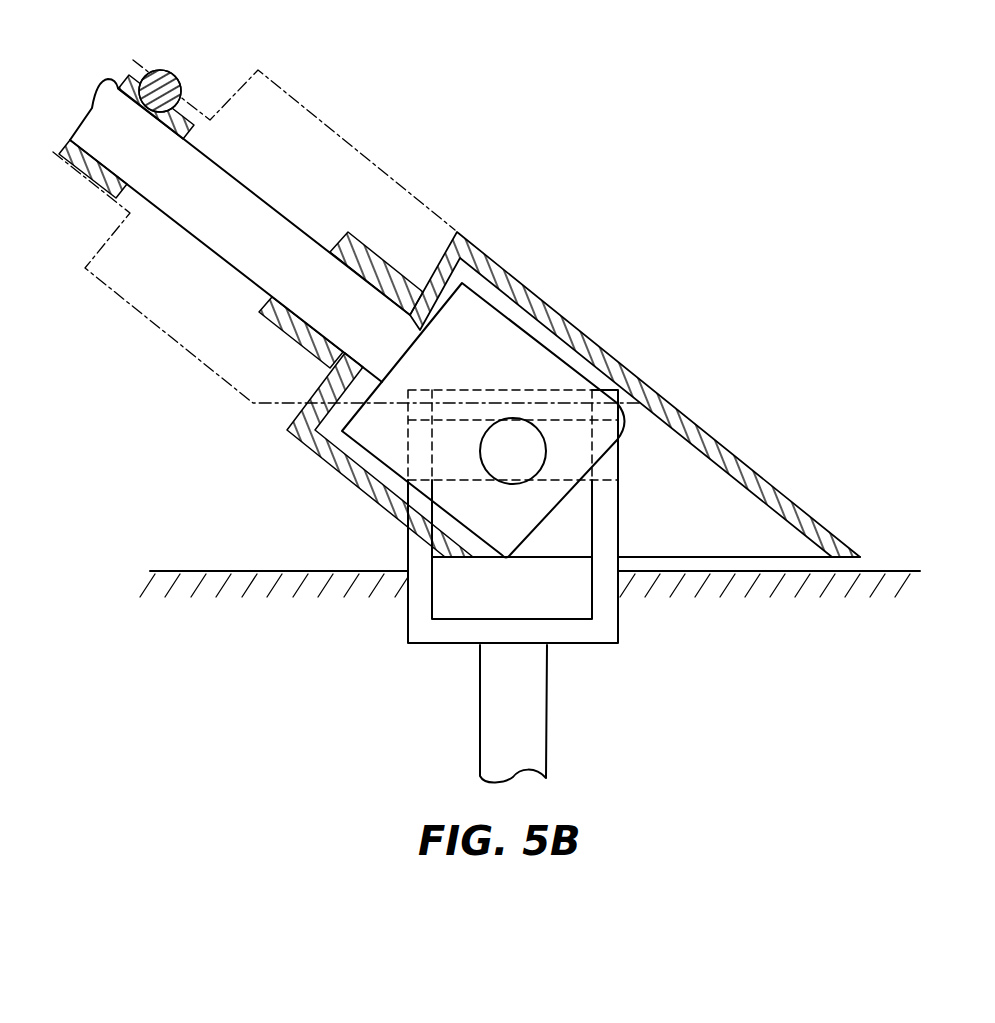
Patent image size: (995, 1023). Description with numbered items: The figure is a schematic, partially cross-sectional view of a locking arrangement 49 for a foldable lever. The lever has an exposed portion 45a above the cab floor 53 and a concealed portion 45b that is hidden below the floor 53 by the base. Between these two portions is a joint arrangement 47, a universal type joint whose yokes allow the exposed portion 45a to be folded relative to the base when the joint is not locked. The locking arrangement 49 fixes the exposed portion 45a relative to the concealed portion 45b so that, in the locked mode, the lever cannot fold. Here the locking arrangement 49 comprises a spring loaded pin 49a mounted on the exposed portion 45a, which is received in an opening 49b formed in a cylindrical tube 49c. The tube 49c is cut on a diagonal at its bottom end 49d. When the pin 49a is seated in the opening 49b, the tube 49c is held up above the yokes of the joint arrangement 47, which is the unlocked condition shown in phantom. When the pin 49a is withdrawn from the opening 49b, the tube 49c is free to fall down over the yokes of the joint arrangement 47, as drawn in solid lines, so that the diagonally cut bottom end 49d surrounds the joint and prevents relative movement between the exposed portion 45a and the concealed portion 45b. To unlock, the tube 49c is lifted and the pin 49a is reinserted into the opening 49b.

The exposed portion 45a is at (270, 206).
The concealed portion 45b is at (547, 693).
The joint arrangement 47 is at (620, 510).
The locking arrangement 49 is at (513, 245).
The spring loaded pin 49a is at (168, 80).
The opening 49b is at (377, 263).
The cylindrical tube 49c is at (577, 326).
The bottom end 49d is at (783, 556).
The floor 53 is at (225, 570).